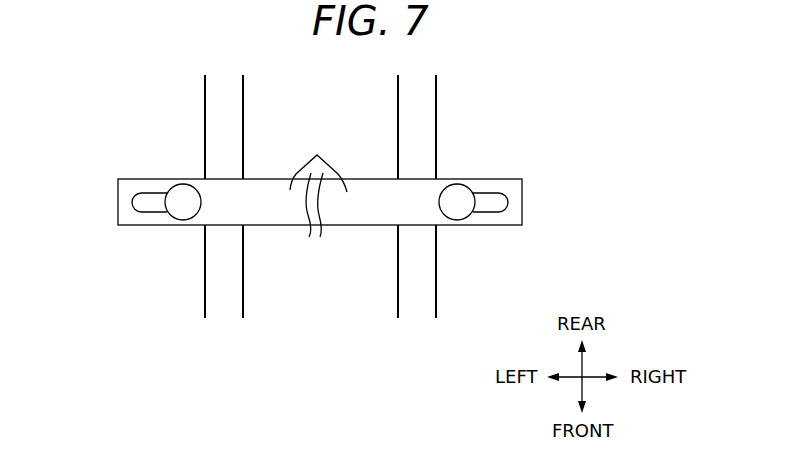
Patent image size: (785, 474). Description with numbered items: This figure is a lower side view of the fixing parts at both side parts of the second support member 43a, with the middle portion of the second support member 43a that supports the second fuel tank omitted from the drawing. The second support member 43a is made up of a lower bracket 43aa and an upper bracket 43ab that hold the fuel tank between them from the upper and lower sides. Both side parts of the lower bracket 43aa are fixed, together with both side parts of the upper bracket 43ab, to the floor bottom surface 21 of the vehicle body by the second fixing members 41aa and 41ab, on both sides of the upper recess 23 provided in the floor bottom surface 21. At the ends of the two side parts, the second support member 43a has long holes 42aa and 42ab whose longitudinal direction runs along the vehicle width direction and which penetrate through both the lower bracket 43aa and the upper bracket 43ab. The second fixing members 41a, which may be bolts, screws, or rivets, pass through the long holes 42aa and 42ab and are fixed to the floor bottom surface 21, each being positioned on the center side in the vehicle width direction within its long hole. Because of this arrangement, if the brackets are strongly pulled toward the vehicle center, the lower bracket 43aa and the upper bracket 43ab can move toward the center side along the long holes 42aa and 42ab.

The floor bottom surface 21 is at (453, 282).
The upper recess 23 is at (357, 283).
The second fixing members 41a is at (329, 175).
The second fixing member 41aa is at (456, 189).
The second fixing member 41ab is at (183, 190).
The long hole 42aa is at (495, 201).
The long hole 42ab is at (145, 202).
The second support member 43a is at (317, 169).
The lower bracket 43aa is at (308, 205).
The upper bracket 43ab is at (320, 205).